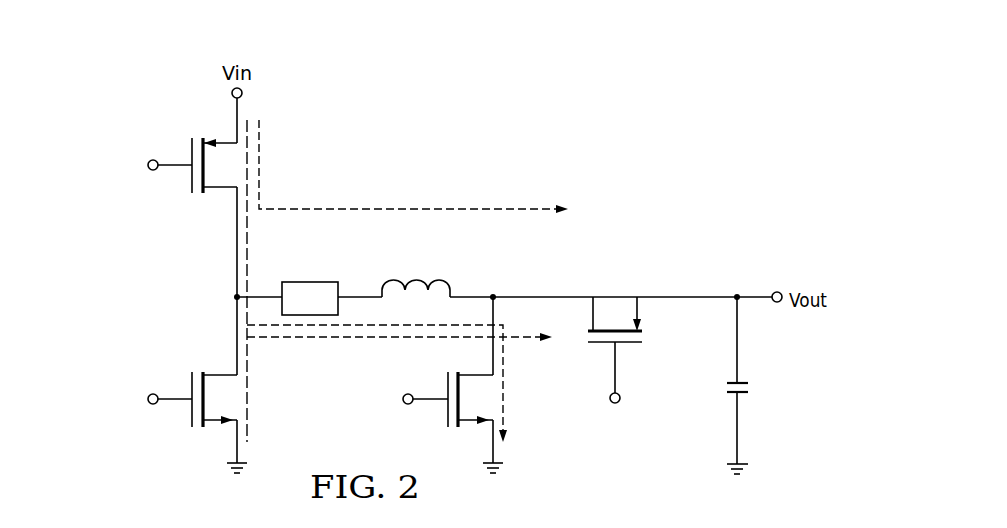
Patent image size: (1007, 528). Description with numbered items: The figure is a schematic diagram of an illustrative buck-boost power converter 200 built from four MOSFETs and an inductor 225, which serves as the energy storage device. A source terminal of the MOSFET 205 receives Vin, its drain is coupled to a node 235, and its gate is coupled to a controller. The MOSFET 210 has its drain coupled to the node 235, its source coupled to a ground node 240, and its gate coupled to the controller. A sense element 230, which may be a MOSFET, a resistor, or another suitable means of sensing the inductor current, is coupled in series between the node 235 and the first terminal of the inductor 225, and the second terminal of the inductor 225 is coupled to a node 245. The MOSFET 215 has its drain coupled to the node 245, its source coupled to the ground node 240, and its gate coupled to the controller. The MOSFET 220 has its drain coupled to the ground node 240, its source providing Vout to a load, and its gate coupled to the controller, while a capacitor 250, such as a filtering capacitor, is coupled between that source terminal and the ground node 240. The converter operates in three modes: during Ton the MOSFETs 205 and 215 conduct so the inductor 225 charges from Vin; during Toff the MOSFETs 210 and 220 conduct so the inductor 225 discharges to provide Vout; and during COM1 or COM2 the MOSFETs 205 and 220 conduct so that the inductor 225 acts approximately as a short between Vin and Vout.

The buck-boost power converter 200 is at (591, 112).
The MOSFET 205 is at (192, 148).
The MOSFET 210 is at (192, 415).
The MOSFET 215 is at (448, 415).
The MOSFET 220 is at (633, 345).
The inductor 225 is at (404, 281).
The sense element 230 is at (310, 282).
The node 235 is at (234, 295).
The ground node 240 is at (226, 466).
The node 245 is at (496, 294).
The capacitor 250 is at (752, 388).